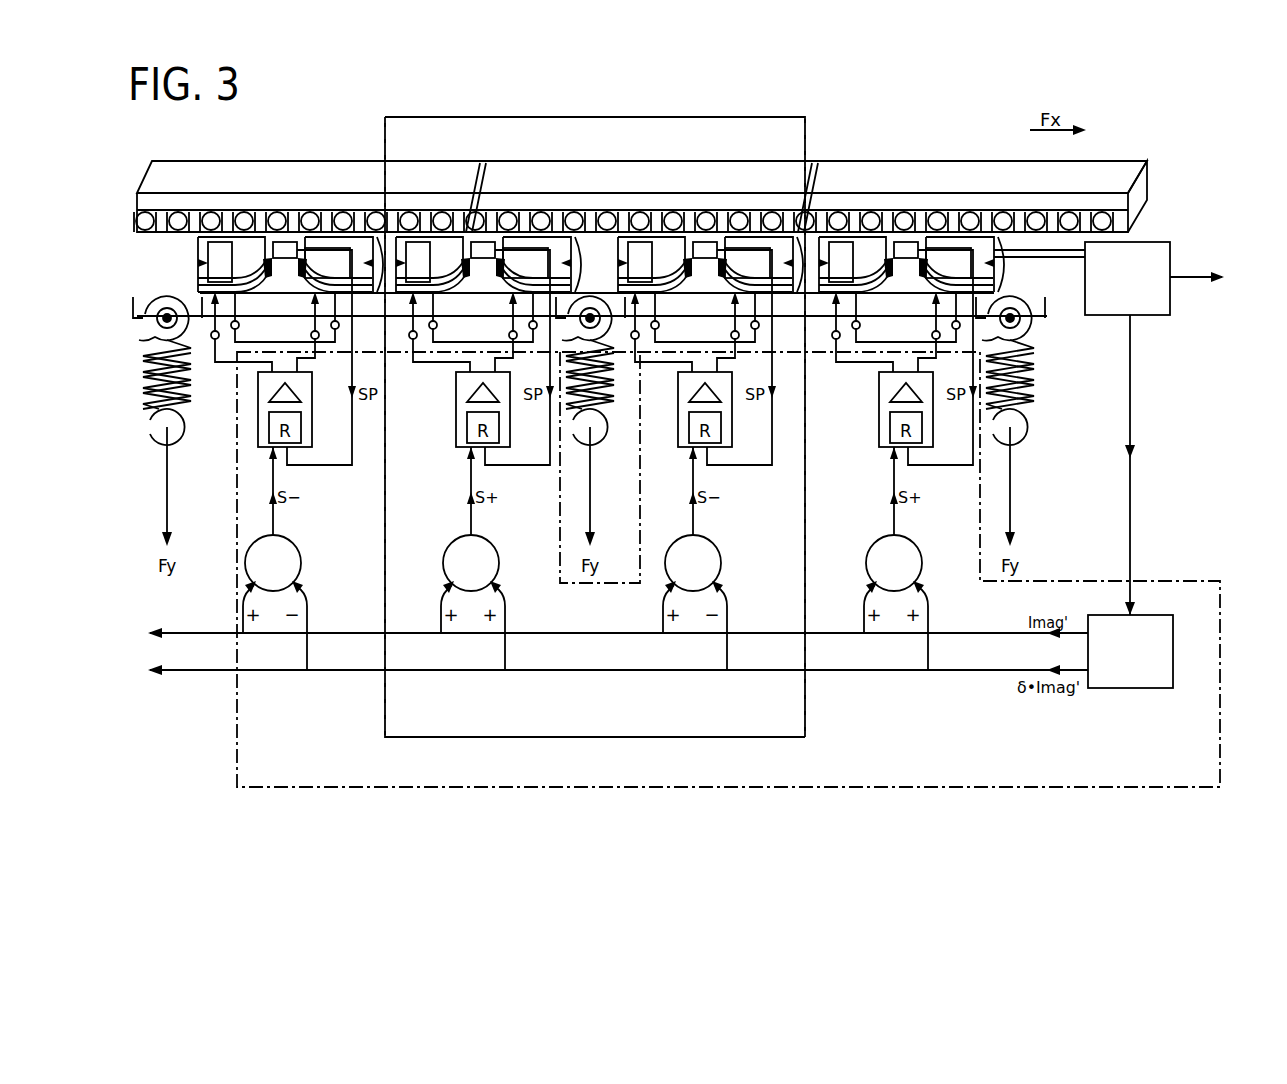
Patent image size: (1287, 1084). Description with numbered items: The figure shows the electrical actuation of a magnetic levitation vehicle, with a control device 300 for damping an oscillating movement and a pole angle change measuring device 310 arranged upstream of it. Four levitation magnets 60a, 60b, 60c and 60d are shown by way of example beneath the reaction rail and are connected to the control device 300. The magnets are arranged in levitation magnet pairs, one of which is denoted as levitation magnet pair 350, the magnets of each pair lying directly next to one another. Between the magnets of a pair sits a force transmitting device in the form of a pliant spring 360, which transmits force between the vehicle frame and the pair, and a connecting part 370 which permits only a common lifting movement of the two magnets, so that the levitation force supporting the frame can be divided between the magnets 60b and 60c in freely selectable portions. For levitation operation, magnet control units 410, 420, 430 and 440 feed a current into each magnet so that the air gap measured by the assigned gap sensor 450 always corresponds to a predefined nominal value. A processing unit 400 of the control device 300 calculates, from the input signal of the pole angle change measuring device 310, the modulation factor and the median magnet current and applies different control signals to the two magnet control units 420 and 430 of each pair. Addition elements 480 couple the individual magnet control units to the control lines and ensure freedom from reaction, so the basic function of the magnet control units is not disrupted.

The levitation magnet 60a is at (227, 262).
The levitation magnet 60b is at (425, 262).
The levitation magnet 60c is at (647, 262).
The levitation magnet 60d is at (848, 262).
The gap sensor 450 is at (290, 242).
The connecting part 370 is at (167, 296).
The pliant spring 360 is at (193, 394).
The magnet control unit 410 is at (258, 440).
The magnet control unit 420 is at (456, 436).
The magnet control unit 430 is at (678, 440).
The magnet control unit 440 is at (879, 440).
The addition element 480 is at (301, 566).
The pole angle change measuring device 310 is at (1108, 317).
The control device 300 is at (1172, 581).
The levitation magnet pair 350 is at (806, 708).
The processing unit 400 is at (1120, 690).